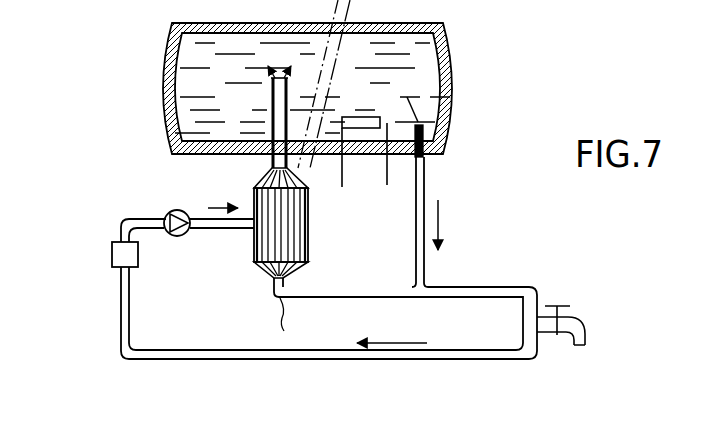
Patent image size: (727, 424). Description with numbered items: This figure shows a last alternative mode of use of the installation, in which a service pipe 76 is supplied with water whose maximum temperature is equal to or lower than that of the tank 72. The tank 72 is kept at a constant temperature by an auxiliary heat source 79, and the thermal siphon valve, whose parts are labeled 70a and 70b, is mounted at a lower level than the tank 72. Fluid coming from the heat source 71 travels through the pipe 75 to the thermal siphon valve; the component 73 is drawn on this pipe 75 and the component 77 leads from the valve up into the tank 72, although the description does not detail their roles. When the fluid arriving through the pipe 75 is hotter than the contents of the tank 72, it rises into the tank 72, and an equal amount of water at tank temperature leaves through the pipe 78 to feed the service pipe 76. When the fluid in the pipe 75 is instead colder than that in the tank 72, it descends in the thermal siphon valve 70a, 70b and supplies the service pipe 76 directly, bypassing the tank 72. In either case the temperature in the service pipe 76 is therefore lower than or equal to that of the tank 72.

The tank 72 is at (455, 57).
The auxiliary heat source 79 is at (383, 124).
The spray pipe / return line into tank 77 is at (273, 100).
The pipe 78 is at (424, 192).
The filter inlet 70a is at (253, 224).
The filter outlet 70b is at (273, 165).
The pump 73 is at (177, 237).
The pipe 75 is at (147, 218).
The heat source 71 is at (112, 250).
The service pipe 76 is at (123, 322).